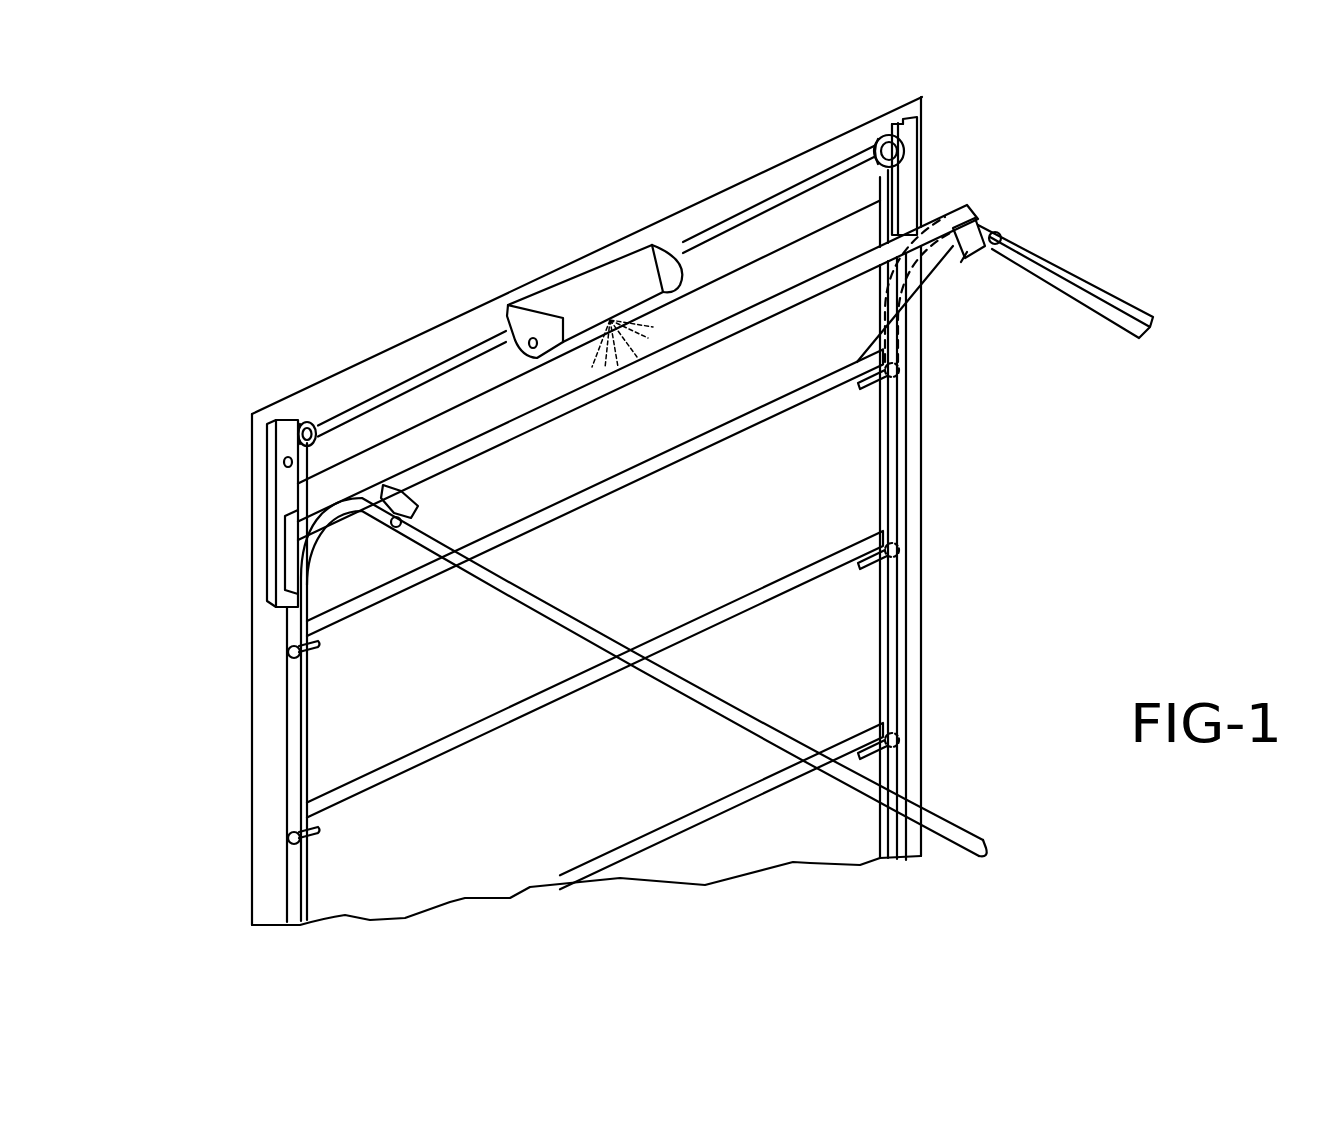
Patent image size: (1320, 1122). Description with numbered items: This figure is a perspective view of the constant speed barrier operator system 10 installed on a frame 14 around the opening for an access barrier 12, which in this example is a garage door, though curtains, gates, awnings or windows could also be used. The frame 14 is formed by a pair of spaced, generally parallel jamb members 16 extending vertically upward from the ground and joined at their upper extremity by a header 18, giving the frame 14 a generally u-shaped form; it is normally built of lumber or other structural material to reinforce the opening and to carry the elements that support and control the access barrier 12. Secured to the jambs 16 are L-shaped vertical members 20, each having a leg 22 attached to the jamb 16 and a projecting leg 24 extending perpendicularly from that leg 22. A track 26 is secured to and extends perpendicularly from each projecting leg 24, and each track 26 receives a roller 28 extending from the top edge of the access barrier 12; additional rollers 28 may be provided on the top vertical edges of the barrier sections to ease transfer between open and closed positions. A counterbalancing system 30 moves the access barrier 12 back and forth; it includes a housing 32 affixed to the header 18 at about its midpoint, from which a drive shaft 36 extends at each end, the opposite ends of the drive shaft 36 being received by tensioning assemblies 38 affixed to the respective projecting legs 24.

The constant speed barrier operator system 10 is at (1173, 181).
The access barrier 12 is at (868, 518).
The frame 14 is at (459, 313).
The jamb members 16 is at (267, 710).
The header 18 is at (373, 370).
The L-shaped vertical members 20 is at (266, 450).
The leg 22 is at (272, 472).
The projecting leg 24 is at (288, 494).
The track 26 is at (512, 588).
The roller 28 is at (287, 652).
The counterbalancing system 30 is at (516, 251).
The housing 32 is at (600, 283).
The drive shaft 36 is at (782, 194).
The tensioning assemblies 38 is at (880, 137).